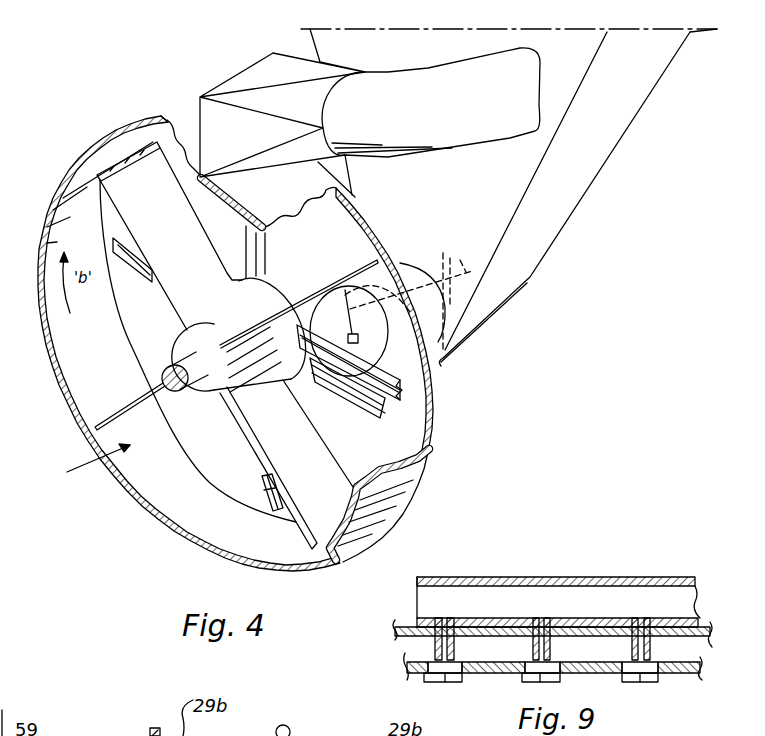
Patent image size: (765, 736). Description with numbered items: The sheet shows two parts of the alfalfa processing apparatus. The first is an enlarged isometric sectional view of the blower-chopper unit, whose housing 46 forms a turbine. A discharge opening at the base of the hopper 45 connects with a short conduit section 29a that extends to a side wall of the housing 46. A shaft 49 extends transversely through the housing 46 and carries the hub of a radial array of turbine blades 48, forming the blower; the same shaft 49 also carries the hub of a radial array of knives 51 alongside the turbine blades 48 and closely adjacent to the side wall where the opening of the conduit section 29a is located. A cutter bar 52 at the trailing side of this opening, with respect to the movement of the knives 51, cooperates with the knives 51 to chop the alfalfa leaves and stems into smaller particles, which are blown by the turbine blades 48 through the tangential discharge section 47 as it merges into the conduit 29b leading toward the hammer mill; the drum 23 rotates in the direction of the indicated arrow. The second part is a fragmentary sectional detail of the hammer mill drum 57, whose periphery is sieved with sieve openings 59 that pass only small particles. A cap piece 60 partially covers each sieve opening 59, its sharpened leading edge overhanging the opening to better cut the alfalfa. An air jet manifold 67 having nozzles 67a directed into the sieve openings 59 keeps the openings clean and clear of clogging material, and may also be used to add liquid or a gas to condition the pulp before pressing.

In FIG. 4, the rotor drum 23 is at (233, 343).
In FIG. 4, the conduit section 29a is at (432, 338).
In FIG. 4, the conduit 29b is at (471, 139).
In FIG. 4, the hopper 45 is at (625, 122).
In FIG. 4, the blower-chopper housing 46 is at (403, 470).
In FIG. 4, the tangential discharge section 47 is at (170, 112).
In FIG. 4, the turbine blades 48 is at (193, 218).
In FIG. 4, the shaft 49 is at (187, 370).
In FIG. 4, the knives 51 is at (139, 273).
In FIG. 4, the cutter bar 52 is at (368, 410).
In FIG. 9, the rotating drum 57 is at (677, 677).
In FIG. 9, the sieve openings 59 is at (637, 667).
In FIG. 9, the cap piece 60 is at (648, 685).
In FIG. 9, the air jet manifold 67 is at (562, 578).
In FIG. 9, the nozzles 67a is at (456, 647).